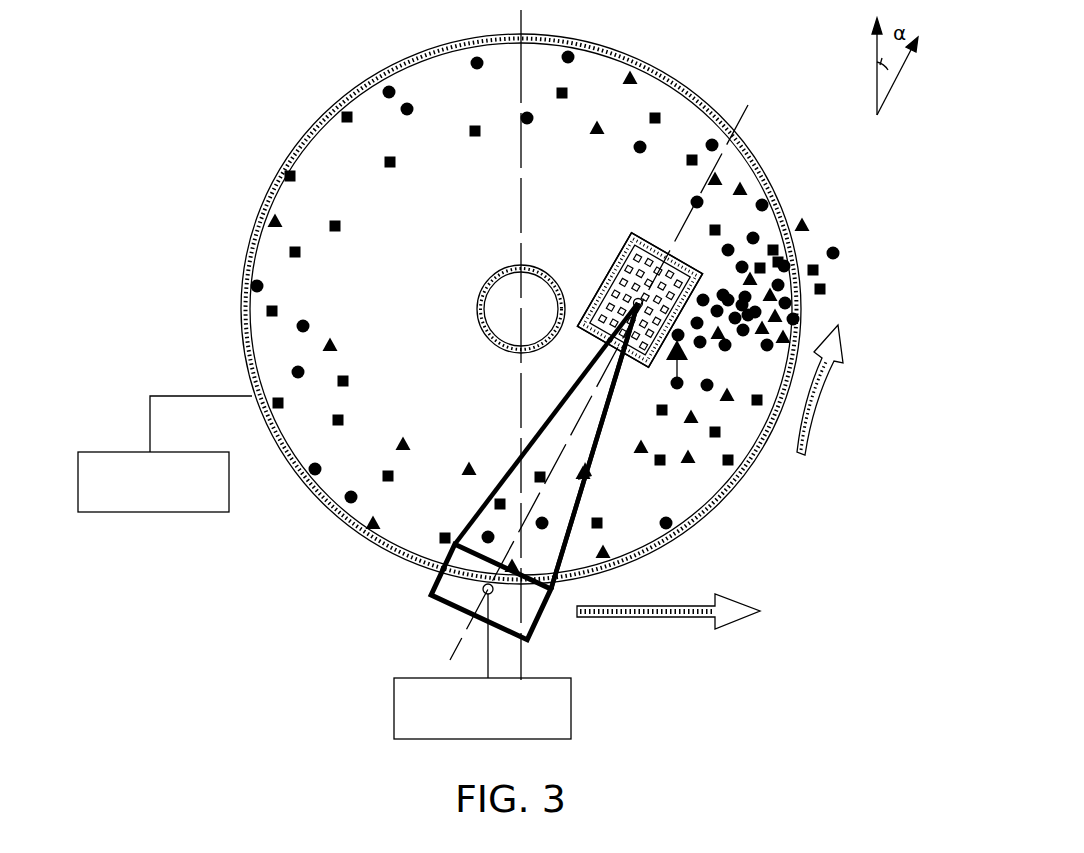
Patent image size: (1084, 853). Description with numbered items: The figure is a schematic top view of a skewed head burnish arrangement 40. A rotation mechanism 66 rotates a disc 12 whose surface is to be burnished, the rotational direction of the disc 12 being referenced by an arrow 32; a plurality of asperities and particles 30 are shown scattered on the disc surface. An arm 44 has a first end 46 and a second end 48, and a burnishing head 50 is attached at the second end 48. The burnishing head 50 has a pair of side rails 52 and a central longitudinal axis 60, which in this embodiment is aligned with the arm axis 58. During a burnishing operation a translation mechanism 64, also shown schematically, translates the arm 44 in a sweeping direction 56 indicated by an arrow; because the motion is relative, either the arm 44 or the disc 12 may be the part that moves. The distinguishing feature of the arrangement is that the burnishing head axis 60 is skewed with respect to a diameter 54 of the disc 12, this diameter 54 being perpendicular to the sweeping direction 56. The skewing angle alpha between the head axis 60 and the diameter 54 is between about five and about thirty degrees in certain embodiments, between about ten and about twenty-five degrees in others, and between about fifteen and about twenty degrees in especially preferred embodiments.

The disc 12 is at (252, 214).
The asperities, particles 30 is at (633, 78).
The arrow indicating rotational direction 32 is at (832, 398).
The arrangement 40 is at (252, 112).
The arm 44 is at (477, 513).
The first end 46 is at (427, 613).
The second end 48 is at (586, 344).
The burnishing head 50 is at (610, 282).
The side rails 52 is at (630, 233).
The diameter 54 is at (522, 14).
The sweeping direction 56 is at (667, 607).
The arm axis 58 is at (580, 422).
The central longitudinal axis 60 is at (746, 107).
The translation mechanism 64 is at (572, 710).
The rotation mechanism 66 is at (148, 512).